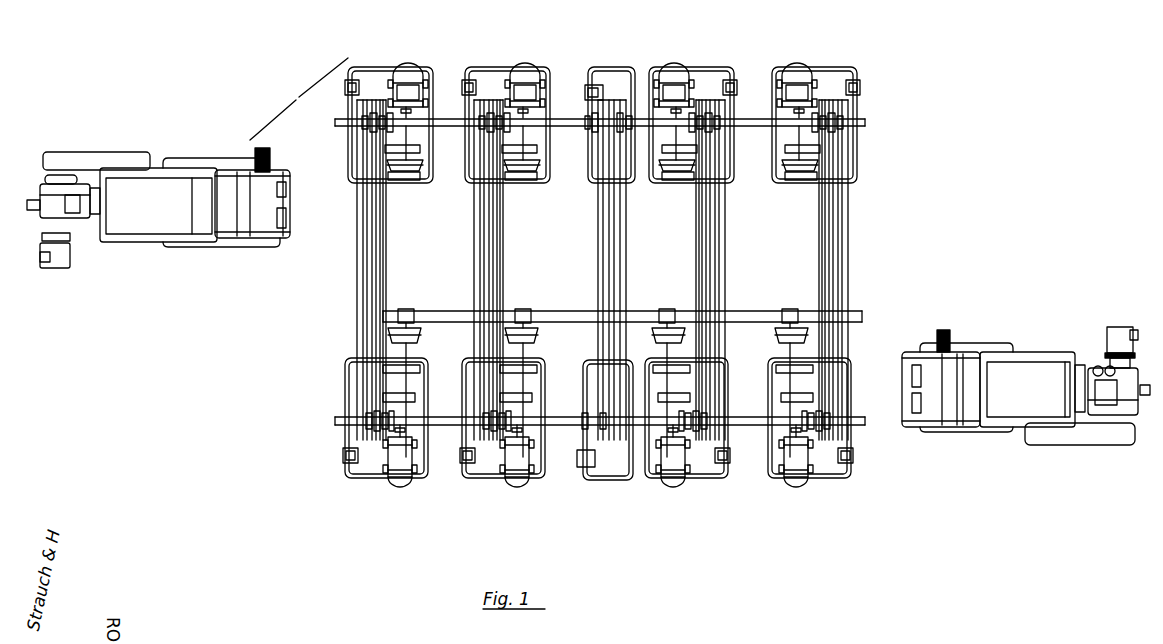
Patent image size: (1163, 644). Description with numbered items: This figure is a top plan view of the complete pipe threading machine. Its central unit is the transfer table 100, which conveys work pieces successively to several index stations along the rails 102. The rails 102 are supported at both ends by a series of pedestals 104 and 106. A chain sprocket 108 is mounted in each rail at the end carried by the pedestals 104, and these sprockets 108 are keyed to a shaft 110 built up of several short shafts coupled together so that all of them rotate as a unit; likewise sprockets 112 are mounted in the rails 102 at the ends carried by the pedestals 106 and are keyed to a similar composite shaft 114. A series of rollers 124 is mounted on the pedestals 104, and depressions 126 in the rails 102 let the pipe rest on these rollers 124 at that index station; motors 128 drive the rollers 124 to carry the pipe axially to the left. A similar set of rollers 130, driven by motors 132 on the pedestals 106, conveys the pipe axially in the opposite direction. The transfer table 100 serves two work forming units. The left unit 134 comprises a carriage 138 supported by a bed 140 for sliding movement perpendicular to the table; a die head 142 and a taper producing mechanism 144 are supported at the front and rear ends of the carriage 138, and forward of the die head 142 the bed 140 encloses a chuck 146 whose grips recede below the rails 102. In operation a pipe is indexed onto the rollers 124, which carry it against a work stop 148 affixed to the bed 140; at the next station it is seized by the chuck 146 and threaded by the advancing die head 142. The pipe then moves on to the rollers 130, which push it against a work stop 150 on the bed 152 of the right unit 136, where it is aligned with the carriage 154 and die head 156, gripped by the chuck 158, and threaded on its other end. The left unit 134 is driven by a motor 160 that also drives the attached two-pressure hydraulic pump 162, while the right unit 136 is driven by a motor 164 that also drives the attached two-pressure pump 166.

The transfer table 100 is at (466, 511).
The rails 102 is at (388, 262).
The pedestals 104 is at (366, 67).
The pedestals 106 is at (348, 478).
The chain sprocket 108 is at (362, 121).
The shaft 110 is at (455, 118).
The sprockets 112 is at (360, 419).
The shaft 114 is at (438, 428).
The rollers 124 is at (396, 184).
The depressions 126 is at (358, 161).
The motors 128 is at (407, 62).
The rollers 130 is at (432, 318).
The motors 132 is at (392, 487).
The work forming unit 134 is at (134, 148).
The work forming unit 136 is at (1004, 445).
The carriage 138 is at (165, 218).
The bed 140 is at (185, 247).
The die head 142 is at (248, 224).
The taper producing mechanism 144 is at (50, 195).
The chuck 146 is at (290, 226).
The work stop 148 is at (270, 151).
The work stop 150 is at (941, 330).
The bed 152 is at (999, 343).
The carriage 154 is at (1040, 400).
The die head 156 is at (945, 372).
The chuck 158 is at (912, 375).
The motor 160 is at (45, 220).
The two-pressure hydraulic pump 162 is at (66, 262).
The motor 164 is at (1108, 418).
The two-pressure pump 166 is at (1113, 326).